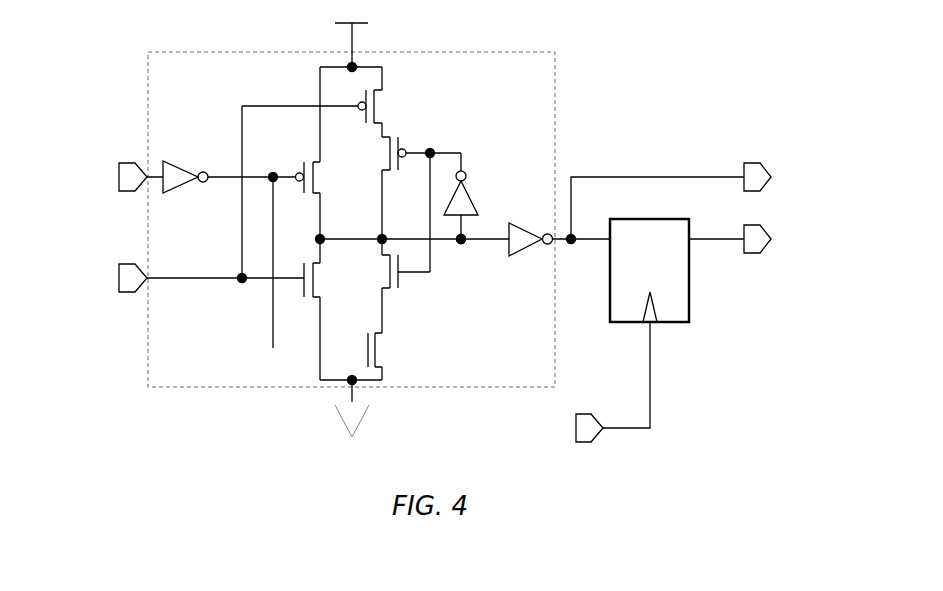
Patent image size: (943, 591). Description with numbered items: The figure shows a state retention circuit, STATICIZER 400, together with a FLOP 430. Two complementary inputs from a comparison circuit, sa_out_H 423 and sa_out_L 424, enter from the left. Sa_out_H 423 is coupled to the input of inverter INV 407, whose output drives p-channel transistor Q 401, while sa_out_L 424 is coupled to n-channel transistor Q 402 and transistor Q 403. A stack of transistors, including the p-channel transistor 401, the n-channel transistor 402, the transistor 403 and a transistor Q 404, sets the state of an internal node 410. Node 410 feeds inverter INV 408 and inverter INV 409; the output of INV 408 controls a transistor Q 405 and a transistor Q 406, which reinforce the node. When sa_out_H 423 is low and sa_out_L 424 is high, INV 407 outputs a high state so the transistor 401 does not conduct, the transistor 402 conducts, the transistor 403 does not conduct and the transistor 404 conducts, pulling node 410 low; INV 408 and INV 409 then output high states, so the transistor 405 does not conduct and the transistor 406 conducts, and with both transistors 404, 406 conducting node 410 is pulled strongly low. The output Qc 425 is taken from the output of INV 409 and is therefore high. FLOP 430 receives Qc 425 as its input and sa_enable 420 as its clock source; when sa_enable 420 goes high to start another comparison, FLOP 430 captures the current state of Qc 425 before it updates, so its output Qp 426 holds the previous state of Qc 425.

The STATICIZER 400 is at (556, 127).
The p-channel transistor Q401 401 is at (318, 176).
The n-channel transistor Q402 402 is at (322, 278).
The transistor Q403 403 is at (380, 107).
The transistor Q404 404 is at (386, 348).
The transistor Q405 405 is at (384, 152).
The transistor Q406 406 is at (380, 270).
The inverter INV 407 is at (185, 160).
The inverter INV 408 is at (474, 196).
The inverter INV 409 is at (559, 261).
The node 410 is at (461, 244).
The sa_enable 420 is at (551, 428).
The sa_out_H 423 is at (94, 177).
The sa_out_L 424 is at (95, 280).
The Qc 425 is at (784, 177).
The Qp 426 is at (785, 239).
The FLOP 430 is at (646, 323).